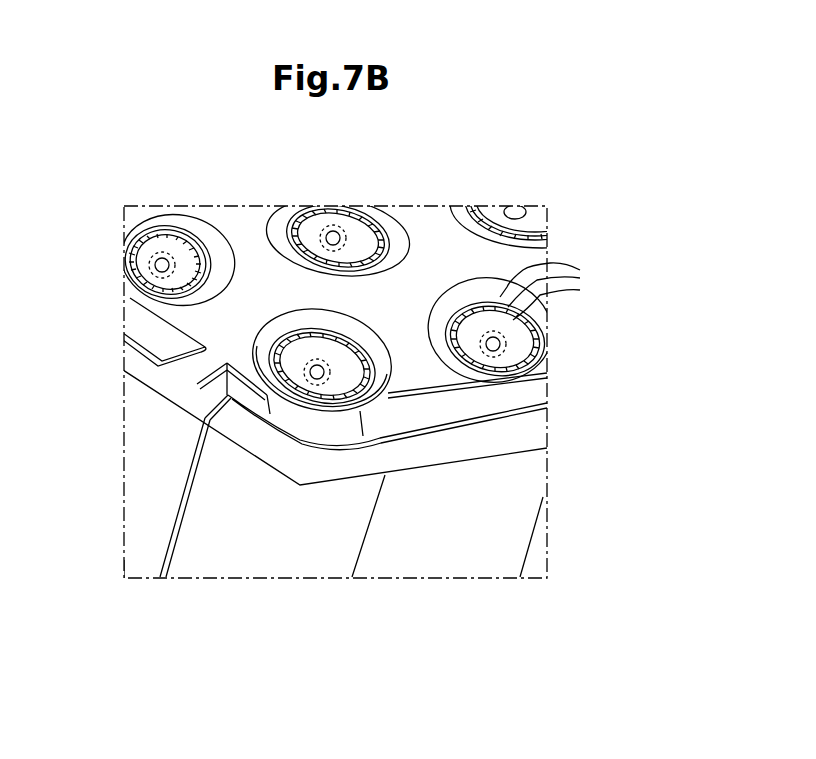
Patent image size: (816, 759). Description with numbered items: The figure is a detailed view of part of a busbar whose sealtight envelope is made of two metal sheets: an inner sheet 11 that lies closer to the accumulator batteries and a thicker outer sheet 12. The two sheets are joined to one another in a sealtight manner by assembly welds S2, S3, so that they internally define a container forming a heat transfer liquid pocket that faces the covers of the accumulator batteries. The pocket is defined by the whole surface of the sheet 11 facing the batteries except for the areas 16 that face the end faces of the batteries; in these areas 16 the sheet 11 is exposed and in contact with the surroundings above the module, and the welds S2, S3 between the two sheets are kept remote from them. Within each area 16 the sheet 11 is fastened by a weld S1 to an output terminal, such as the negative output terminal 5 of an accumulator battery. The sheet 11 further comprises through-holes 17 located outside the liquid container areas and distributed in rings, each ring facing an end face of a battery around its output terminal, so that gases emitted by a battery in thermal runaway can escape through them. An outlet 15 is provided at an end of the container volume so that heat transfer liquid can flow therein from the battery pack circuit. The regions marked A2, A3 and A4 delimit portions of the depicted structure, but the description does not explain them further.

The negative output terminal 5 is at (160, 267).
The sheet 11 is at (163, 240).
The outer sheet 12 is at (425, 207).
The outlet 15 is at (178, 396).
The areas 16 is at (187, 228).
The through-holes 17 is at (558, 289).
The weld S1 is at (150, 258).
The weld S2 is at (118, 242).
The weld S3 is at (145, 347).
The area A2 is at (140, 500).
The area A3 is at (270, 560).
The area A4 is at (448, 557).